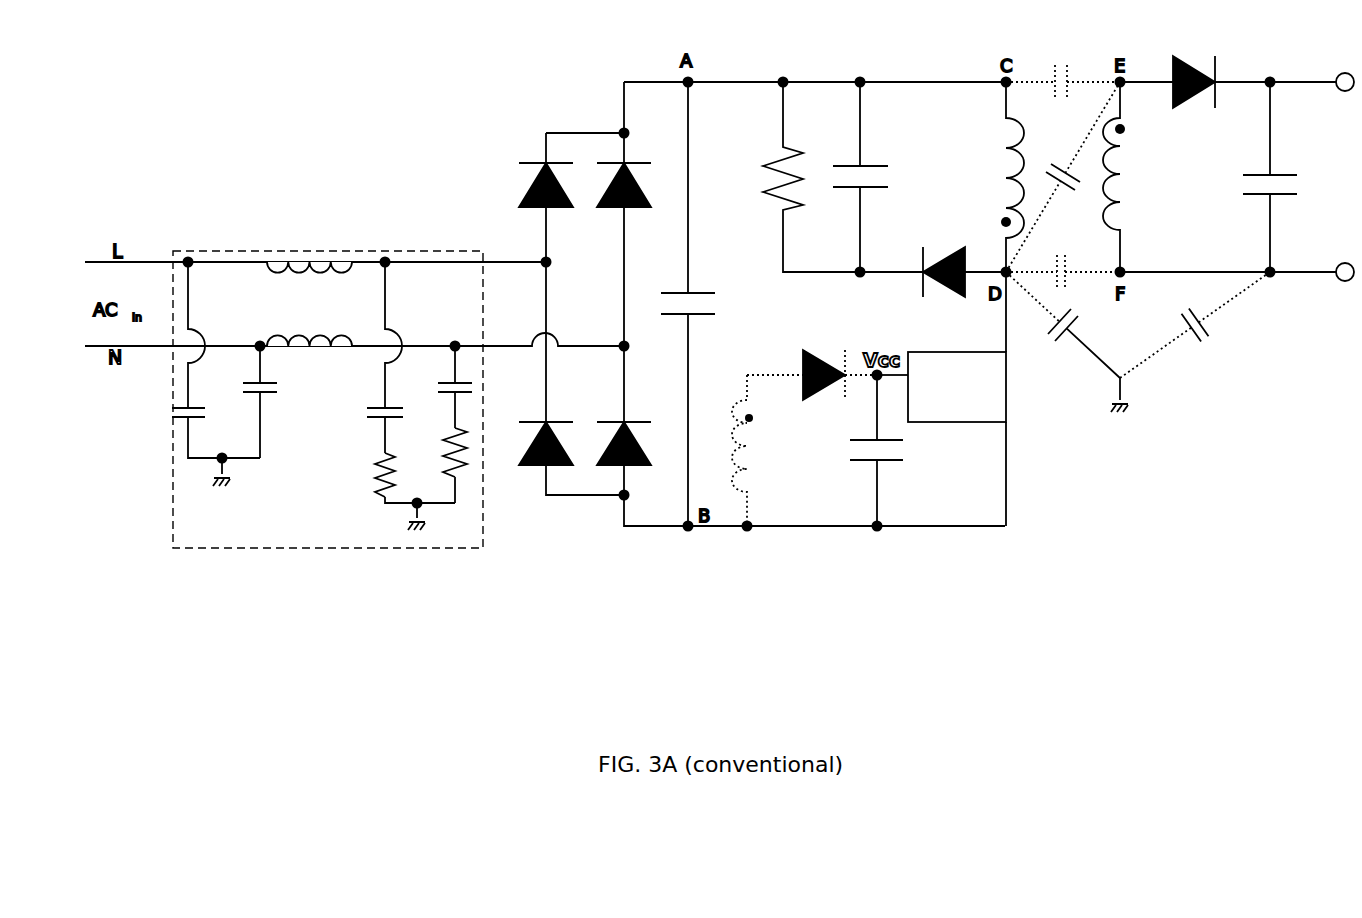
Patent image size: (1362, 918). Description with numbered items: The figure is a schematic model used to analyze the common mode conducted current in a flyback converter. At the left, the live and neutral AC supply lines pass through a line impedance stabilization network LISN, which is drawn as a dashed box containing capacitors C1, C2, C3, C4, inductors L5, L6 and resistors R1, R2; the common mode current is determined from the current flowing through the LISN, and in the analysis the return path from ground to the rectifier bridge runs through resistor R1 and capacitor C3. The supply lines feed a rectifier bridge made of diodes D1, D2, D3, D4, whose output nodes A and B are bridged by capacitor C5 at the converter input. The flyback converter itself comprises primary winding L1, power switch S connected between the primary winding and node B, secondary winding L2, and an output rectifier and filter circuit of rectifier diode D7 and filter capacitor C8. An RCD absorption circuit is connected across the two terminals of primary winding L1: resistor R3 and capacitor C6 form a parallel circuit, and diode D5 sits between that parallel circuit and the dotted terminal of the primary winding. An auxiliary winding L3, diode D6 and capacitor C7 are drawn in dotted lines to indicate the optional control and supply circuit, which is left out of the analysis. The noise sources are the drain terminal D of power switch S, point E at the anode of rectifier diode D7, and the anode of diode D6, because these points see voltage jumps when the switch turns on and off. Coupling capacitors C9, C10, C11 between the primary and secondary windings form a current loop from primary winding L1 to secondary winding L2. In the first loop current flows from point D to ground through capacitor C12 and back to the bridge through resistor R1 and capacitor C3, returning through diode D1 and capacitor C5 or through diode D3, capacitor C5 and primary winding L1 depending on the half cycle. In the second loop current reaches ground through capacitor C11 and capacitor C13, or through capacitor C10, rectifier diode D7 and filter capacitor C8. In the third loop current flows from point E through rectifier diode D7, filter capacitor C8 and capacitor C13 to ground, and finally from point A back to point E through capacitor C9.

The line impedance stabilization network LISN is at (328, 387).
The capacitor C1 is at (197, 427).
The capacitor C2 is at (273, 402).
The capacitor C3 is at (373, 399).
The capacitor C4 is at (447, 387).
The capacitor C5 is at (704, 304).
The capacitor C6 is at (878, 177).
The capacitor C7 is at (892, 450).
The filter capacitor C8 is at (1285, 177).
The coupling capacitor C9 is at (1063, 88).
The coupling capacitor C10 is at (1063, 177).
The coupling capacitor C11 is at (1063, 270).
The capacitor C12 is at (1063, 325).
The capacitor C13 is at (1195, 325).
The primary winding L1 is at (1001, 177).
The secondary winding L2 is at (1126, 177).
The auxiliary winding L3 is at (753, 450).
The LISN inductor L5 is at (308, 329).
The LISN inductor L6 is at (308, 283).
The resistor R1 is at (371, 473).
The resistor R2 is at (441, 465).
The resistor R3 is at (829, 177).
The diode D1 is at (530, 185).
The diode D2 is at (638, 185).
The diode D3 is at (533, 443).
The diode D4 is at (634, 443).
The diode D5 is at (964, 258).
The diode D6 is at (812, 374).
The rectifier diode D7 is at (1228, 96).
The power switch S is at (957, 399).